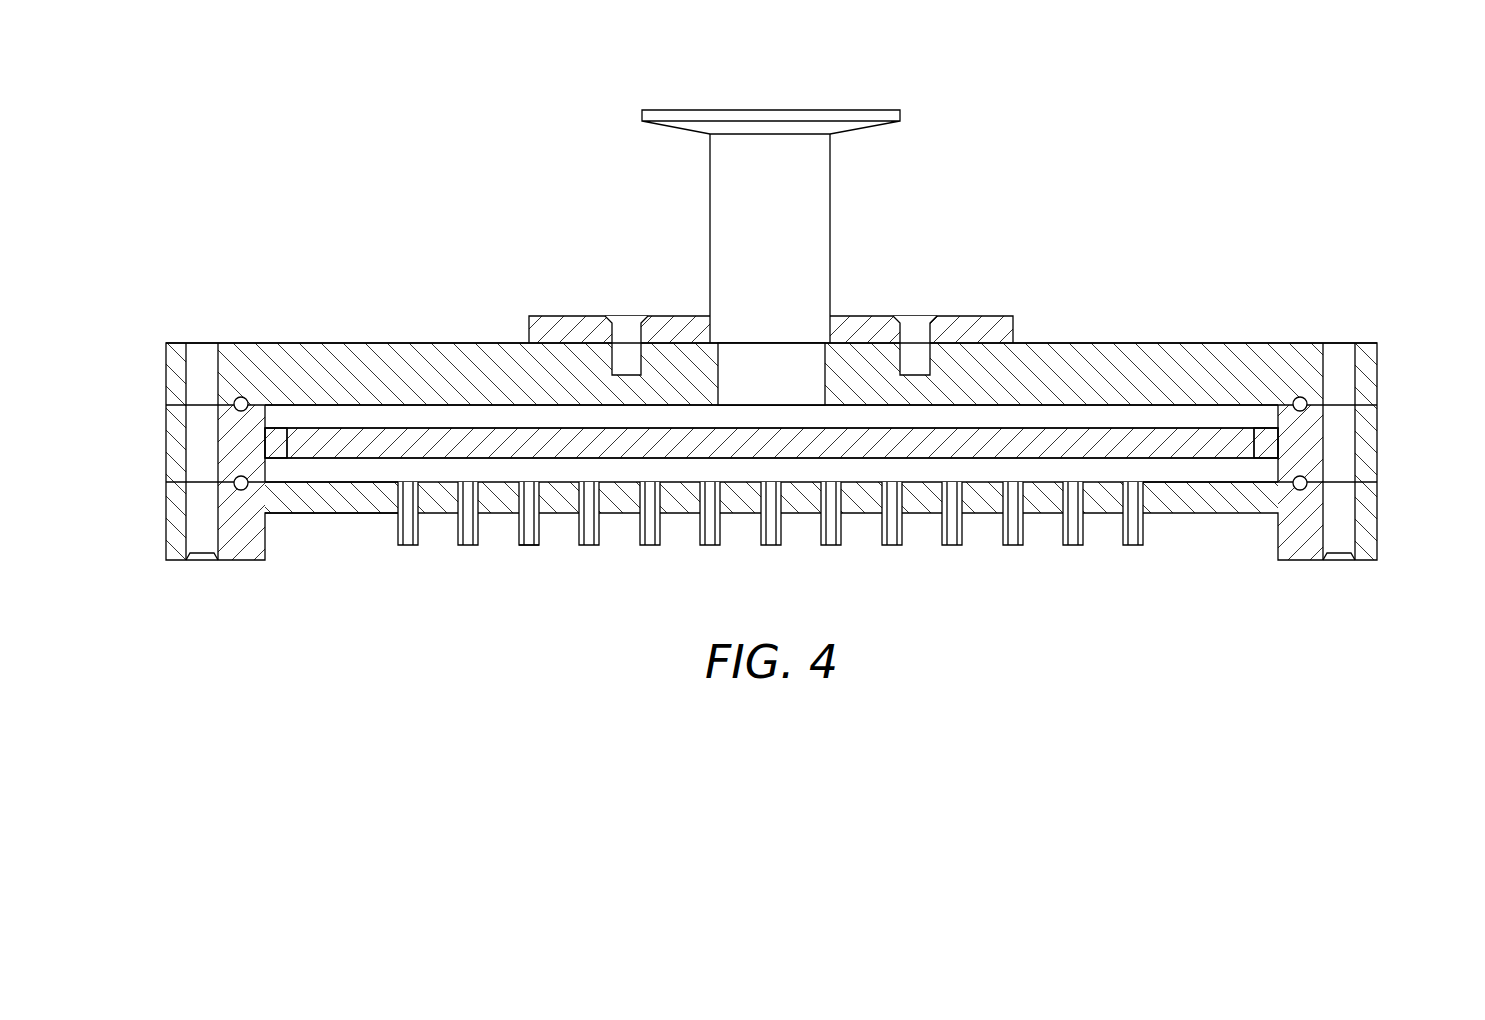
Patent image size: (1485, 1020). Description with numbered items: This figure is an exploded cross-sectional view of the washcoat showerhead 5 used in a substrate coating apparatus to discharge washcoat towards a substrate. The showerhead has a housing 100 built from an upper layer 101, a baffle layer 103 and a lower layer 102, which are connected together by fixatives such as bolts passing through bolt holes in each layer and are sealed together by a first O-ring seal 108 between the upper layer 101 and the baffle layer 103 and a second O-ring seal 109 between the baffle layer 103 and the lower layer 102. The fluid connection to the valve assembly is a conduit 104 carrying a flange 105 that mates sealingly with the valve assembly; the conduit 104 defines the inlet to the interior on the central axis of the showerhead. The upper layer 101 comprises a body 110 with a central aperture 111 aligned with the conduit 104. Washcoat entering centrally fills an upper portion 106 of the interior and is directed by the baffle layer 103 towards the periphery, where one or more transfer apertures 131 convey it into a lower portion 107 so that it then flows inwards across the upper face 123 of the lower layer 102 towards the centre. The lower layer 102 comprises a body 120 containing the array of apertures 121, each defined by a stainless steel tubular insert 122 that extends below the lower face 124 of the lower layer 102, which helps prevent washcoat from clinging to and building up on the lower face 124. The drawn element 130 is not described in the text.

The washcoat showerhead 5 is at (1066, 181).
The housing 100 is at (150, 343).
The upper layer 101 is at (1385, 371).
The lower layer 102 is at (1385, 517).
The baffle layer 103 is at (1385, 441).
The conduit 104 is at (830, 222).
The flange 105 is at (900, 111).
The upper portion 106 is at (486, 416).
The lower portion 107 is at (1142, 473).
The first O-ring seal 108 is at (1300, 396).
The second O-ring seal 109 is at (1293, 489).
The body 110 is at (1094, 343).
The central aperture 111 is at (740, 367).
The body 120 is at (790, 503).
The array of apertures 121 is at (410, 482).
The tubular insert 122 is at (532, 546).
The upper face 123 is at (328, 475).
The lower face 124 is at (360, 513).
The heater element 130 is at (995, 443).
The transfer aperture 131 is at (1263, 446).